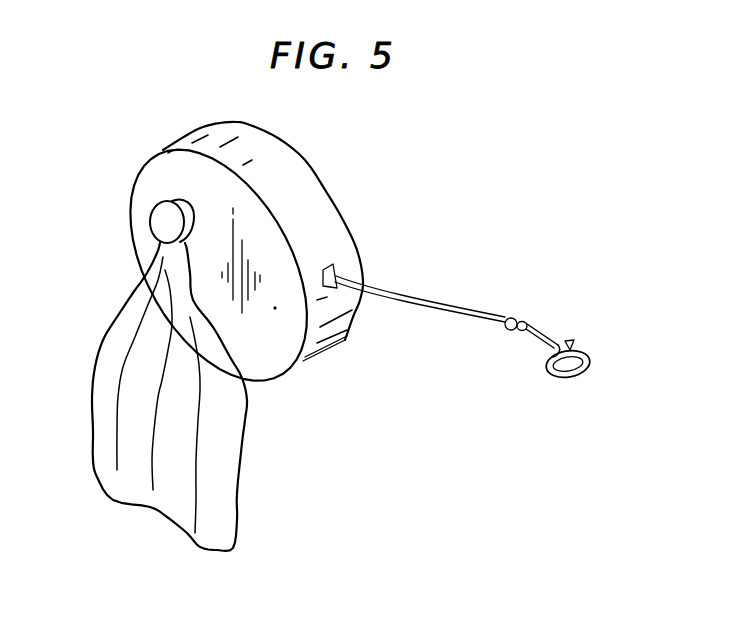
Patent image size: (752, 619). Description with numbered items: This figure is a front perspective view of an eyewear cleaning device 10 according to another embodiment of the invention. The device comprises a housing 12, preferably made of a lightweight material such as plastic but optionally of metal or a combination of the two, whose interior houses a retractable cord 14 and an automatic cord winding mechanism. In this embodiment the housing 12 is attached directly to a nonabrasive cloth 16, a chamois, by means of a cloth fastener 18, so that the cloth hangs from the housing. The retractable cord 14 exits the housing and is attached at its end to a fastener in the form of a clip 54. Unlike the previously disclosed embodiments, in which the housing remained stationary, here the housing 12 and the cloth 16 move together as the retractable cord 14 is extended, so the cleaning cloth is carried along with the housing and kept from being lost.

The eyewear cleaning device 10 is at (399, 149).
The housing 12 is at (310, 348).
The retractable cord 14 is at (468, 302).
The nonabrasive cloth 16 is at (233, 435).
The cloth fastener 18 is at (155, 218).
The clip 54 is at (590, 365).